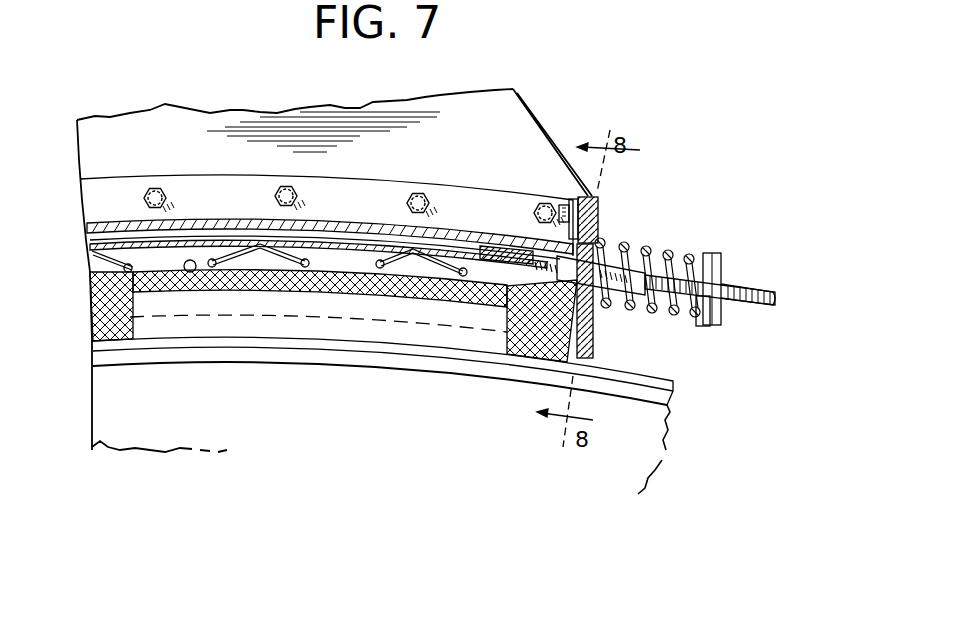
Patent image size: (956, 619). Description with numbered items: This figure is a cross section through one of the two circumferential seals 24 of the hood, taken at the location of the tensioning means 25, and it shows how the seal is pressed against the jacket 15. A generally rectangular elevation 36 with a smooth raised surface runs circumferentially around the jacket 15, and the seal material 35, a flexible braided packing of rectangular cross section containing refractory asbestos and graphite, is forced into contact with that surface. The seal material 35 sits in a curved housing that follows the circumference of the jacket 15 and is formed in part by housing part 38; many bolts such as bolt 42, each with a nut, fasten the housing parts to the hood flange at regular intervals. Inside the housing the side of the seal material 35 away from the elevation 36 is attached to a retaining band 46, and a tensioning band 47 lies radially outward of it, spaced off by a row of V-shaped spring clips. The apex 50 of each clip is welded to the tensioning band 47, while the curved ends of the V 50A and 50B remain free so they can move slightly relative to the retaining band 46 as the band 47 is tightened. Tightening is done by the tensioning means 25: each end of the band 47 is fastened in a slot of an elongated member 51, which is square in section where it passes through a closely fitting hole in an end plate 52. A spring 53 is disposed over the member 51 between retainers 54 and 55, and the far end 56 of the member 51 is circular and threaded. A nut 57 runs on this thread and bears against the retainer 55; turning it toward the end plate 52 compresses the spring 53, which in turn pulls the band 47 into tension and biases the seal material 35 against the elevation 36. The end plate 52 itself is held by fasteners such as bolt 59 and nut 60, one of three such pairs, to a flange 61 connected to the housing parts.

The jacket 15 is at (665, 426).
The circumferential seal 24 is at (88, 262).
The tensioning means 25 is at (692, 230).
The seal material 35 is at (92, 313).
The elevation 36 is at (636, 372).
The housing part 38 is at (362, 192).
The bolt 42 is at (168, 198).
The retaining band 46 is at (191, 272).
The tensioning band 47 is at (352, 240).
The apex of spring clip 50 is at (262, 246).
The curved end of V-shaped spring clip 50A is at (220, 259).
The curved end of V-shaped spring clip 50B is at (300, 261).
The elongated member 51 is at (530, 272).
The end plate 52 is at (588, 326).
The spring 53 is at (664, 250).
The retainer 54 is at (592, 300).
The retainer 55 is at (704, 328).
The threaded end of elongated member 56 is at (752, 291).
The nut 57 is at (724, 268).
The bolt 59 is at (600, 214).
The nut 60 is at (574, 210).
The flange 61 is at (588, 193).